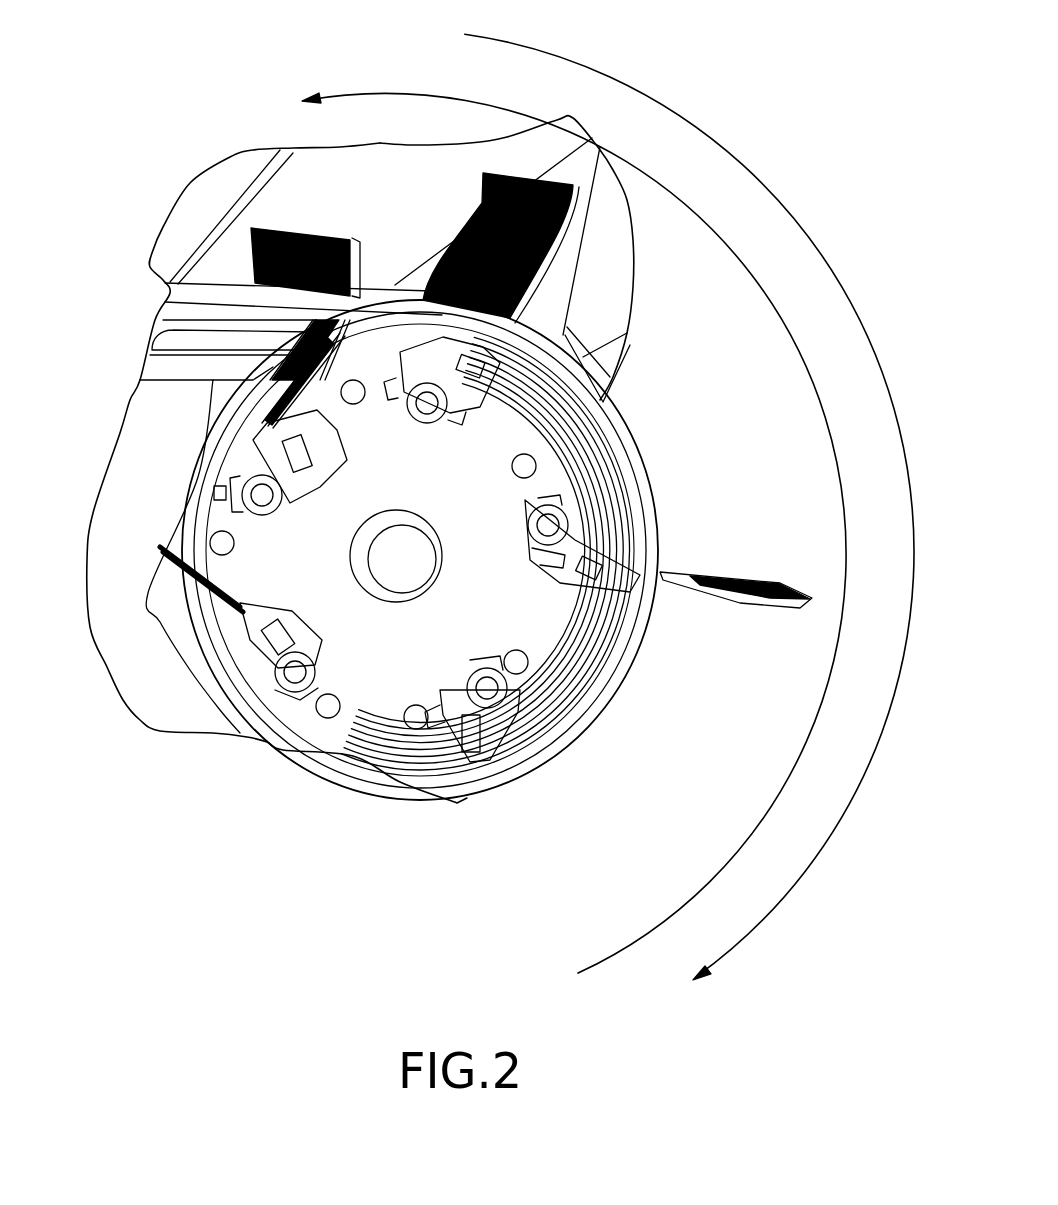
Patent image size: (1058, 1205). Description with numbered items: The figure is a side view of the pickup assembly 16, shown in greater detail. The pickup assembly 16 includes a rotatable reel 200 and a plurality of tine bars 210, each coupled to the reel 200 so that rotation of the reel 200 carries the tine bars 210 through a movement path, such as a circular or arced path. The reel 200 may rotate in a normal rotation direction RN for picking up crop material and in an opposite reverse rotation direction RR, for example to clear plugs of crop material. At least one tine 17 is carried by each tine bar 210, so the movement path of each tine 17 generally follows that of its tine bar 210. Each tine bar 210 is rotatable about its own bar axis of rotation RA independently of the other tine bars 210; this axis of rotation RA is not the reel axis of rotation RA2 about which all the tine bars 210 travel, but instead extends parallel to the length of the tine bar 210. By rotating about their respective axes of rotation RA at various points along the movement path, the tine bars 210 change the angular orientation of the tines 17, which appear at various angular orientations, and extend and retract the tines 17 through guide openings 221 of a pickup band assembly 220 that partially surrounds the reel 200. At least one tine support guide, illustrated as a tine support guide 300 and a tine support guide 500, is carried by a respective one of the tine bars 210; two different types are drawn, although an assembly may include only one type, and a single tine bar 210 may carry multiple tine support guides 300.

The reverse rotation direction RR is at (660, 107).
The normal rotation direction RN is at (693, 208).
The pickup assembly 16 is at (700, 413).
The tines 17 is at (350, 240).
The reel 200 is at (500, 430).
The guide openings 221 is at (615, 500).
The pickup band assembly 220 is at (665, 530).
The tine bars 210 is at (262, 495).
The tine support guide 300 is at (421, 352).
The tine support guide 500 is at (336, 476).
The bar axis of rotation RA is at (277, 503).
The reel axis of rotation RA2 is at (402, 560).